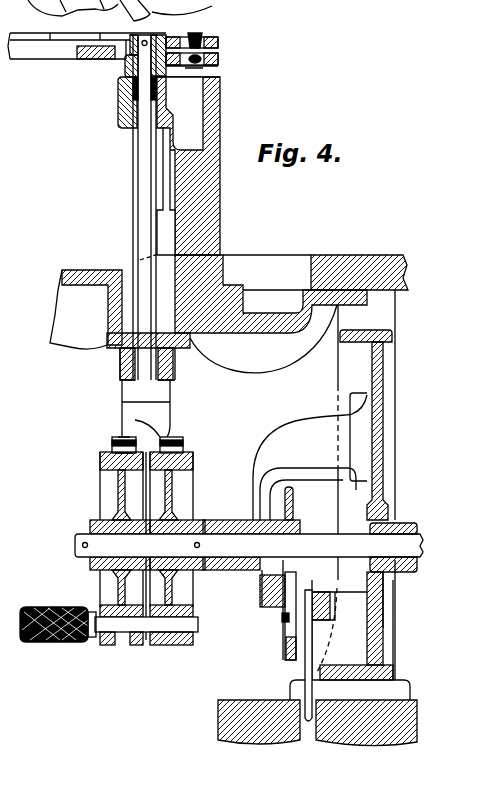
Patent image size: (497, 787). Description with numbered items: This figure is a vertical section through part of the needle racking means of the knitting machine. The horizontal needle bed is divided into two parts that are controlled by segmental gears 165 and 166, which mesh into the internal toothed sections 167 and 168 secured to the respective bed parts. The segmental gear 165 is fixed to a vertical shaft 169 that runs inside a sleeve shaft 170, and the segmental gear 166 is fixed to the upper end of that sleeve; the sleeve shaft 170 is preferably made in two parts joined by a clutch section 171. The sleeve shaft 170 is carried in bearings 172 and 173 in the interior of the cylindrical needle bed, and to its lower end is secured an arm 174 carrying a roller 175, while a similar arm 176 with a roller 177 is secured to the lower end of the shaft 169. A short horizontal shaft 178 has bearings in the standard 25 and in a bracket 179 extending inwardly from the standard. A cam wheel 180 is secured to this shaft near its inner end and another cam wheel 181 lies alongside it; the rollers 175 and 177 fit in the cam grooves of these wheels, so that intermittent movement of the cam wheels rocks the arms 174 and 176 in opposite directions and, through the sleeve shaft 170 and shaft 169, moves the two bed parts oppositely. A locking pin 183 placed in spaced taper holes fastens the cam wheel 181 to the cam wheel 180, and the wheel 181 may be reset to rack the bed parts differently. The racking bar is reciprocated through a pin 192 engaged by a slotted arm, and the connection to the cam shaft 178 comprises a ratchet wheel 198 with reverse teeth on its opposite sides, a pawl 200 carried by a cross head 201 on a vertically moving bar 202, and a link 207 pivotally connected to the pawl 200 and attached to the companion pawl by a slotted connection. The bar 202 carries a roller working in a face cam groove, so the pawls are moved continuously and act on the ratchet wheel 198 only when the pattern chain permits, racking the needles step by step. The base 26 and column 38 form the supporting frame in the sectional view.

The standard 25 is at (382, 355).
The base plate 26 is at (345, 263).
The column 38 is at (213, 197).
The segmental gear 165 is at (190, 33).
The segmental gear 166 is at (185, 67).
The internal toothed section 167 is at (218, 42).
The internal toothed section 168 is at (218, 57).
The vertical shaft 169 is at (128, 63).
The sleeve shaft 170 is at (133, 163).
The clutch section 171 is at (125, 95).
The bearing 172 is at (107, 350).
The bearing 173 is at (125, 115).
The arm 174 is at (130, 418).
The roller 175 is at (180, 450).
The arm 176 is at (120, 434).
The roller 177 is at (115, 448).
The short horizontal shaft 178 is at (76, 541).
The bracket 179 is at (228, 575).
The cam wheel 180 is at (177, 647).
The cam wheel 181 is at (132, 642).
The locking pin 183 is at (40, 641).
The pin 192 is at (232, 580).
The ratchet wheel 198 is at (293, 507).
The pawl 200 is at (287, 643).
The cross head 201 is at (300, 662).
The vertically moving bar 202 is at (312, 720).
The link 207 is at (282, 627).